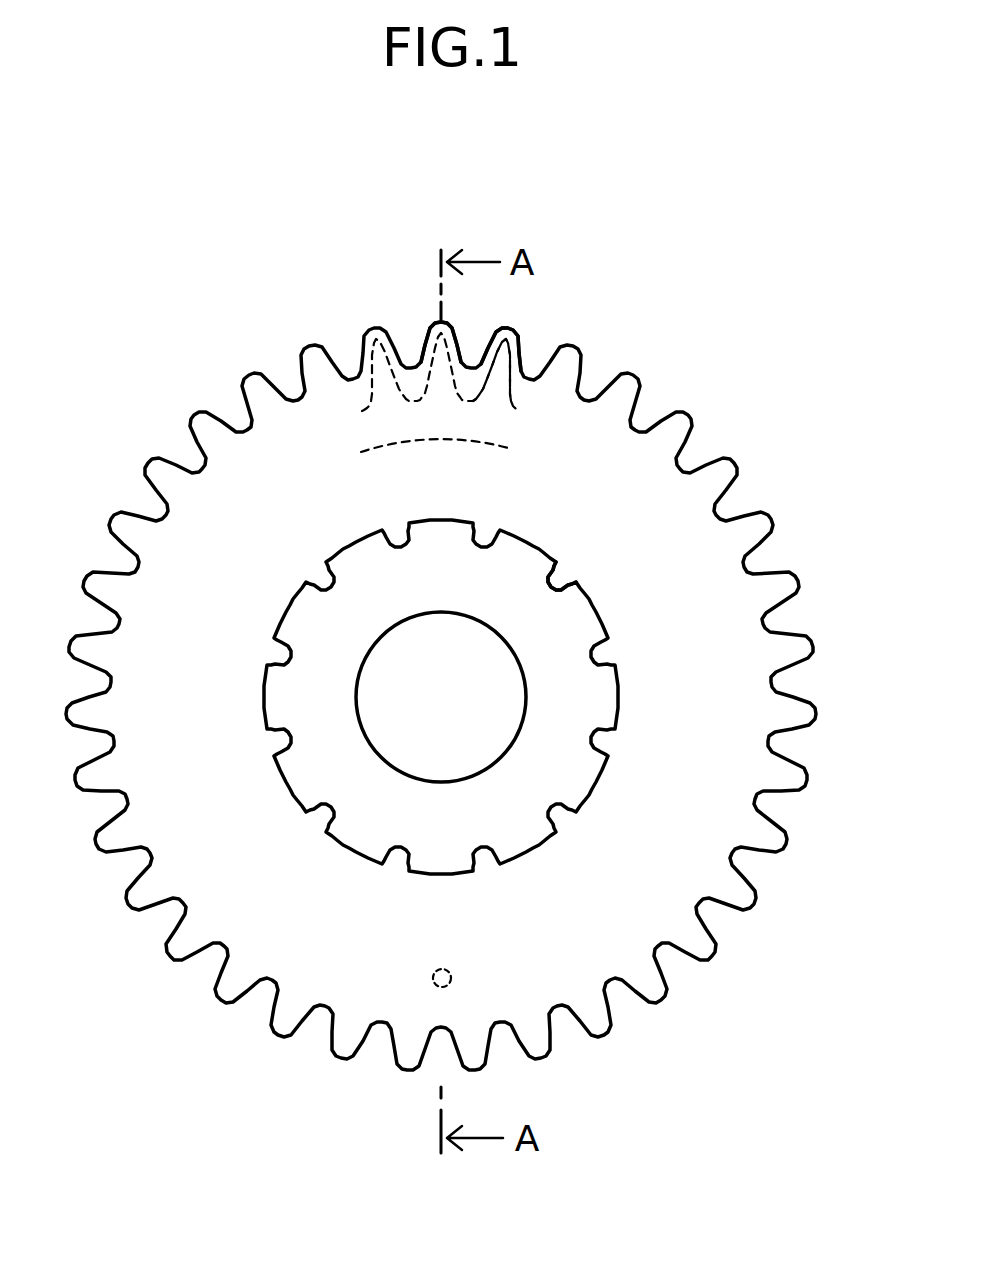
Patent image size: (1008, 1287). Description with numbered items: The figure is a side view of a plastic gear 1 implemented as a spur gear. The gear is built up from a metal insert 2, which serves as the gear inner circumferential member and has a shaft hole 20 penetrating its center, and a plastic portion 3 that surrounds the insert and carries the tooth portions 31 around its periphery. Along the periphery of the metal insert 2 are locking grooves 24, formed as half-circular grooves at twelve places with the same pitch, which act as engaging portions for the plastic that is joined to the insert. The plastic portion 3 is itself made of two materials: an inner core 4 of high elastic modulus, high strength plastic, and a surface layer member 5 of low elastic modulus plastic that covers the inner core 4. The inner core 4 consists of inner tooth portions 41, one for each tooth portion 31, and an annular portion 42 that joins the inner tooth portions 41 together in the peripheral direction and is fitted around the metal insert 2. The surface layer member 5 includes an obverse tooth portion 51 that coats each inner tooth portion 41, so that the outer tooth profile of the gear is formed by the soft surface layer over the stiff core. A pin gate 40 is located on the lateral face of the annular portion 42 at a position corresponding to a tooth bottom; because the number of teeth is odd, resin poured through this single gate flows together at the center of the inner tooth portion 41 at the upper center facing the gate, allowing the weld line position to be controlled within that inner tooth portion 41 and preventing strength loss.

The plastic gear 1 is at (443, 648).
The metal insert 2 is at (585, 620).
The plastic portion 3 is at (592, 331).
The inner core 4 is at (527, 360).
The surface layer member 5 is at (520, 340).
The shaft hole 20 is at (508, 652).
The locking grooves 24 is at (565, 578).
The tooth portion 31 is at (312, 232).
The pin gate 40 is at (452, 975).
The inner tooth portion 41 is at (423, 343).
The annular portion 42 is at (413, 447).
The obverse tooth portion 51 is at (438, 320).